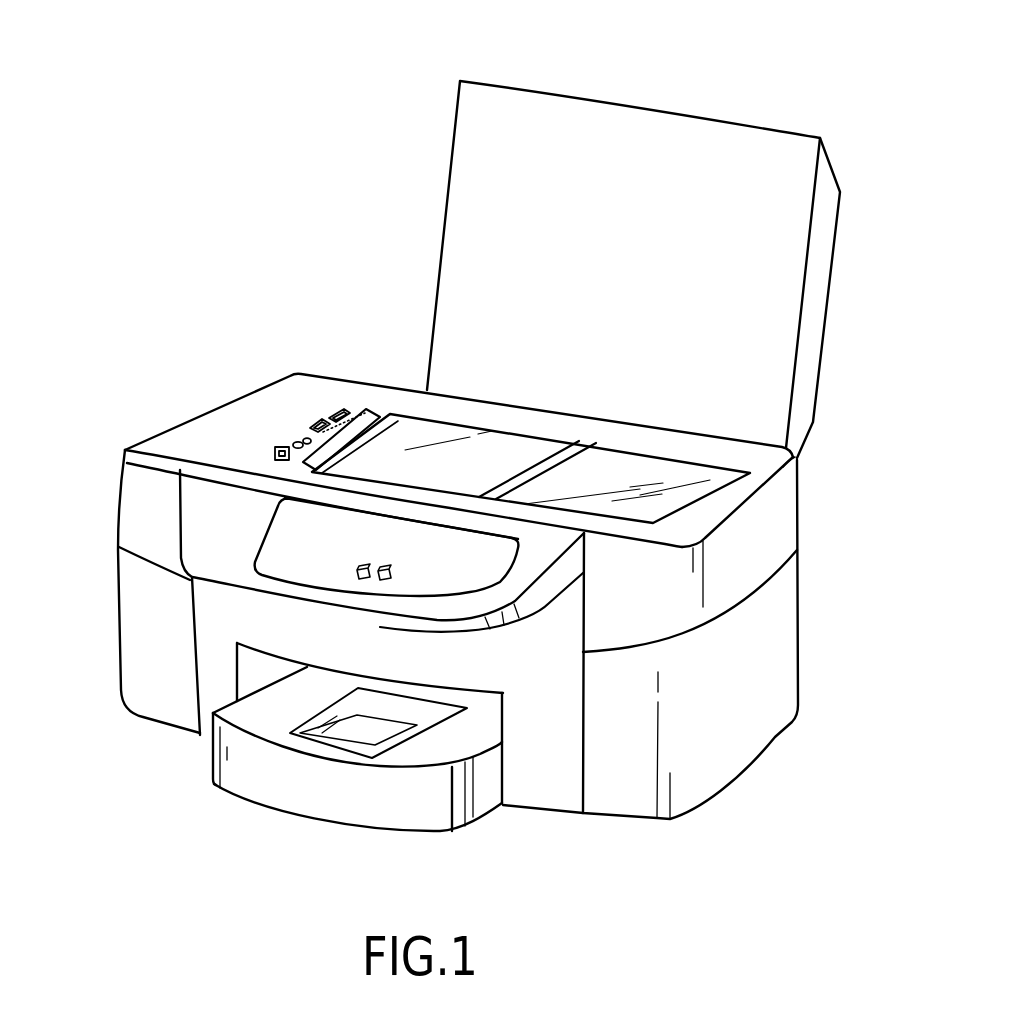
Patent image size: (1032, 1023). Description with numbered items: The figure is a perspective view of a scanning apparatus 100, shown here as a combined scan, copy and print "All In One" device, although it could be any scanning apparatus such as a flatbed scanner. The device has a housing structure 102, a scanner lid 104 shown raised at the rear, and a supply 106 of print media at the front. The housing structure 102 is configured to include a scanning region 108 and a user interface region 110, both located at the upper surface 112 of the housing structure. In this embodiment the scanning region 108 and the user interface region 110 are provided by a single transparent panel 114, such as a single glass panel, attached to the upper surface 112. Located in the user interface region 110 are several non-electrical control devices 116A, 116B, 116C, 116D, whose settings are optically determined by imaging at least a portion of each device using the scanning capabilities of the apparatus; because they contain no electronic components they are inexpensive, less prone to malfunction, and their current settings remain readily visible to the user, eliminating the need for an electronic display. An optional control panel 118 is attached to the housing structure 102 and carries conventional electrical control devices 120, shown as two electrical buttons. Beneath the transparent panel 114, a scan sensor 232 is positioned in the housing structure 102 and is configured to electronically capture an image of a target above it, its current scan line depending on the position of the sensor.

The scanning apparatus 100 is at (773, 52).
The housing structure 102 is at (798, 641).
The scanner lid 104 is at (834, 171).
The supply of print media 106 is at (277, 793).
The scanning region 108 is at (650, 464).
The user interface region 110 is at (357, 366).
The upper surface 112 is at (747, 492).
The transparent panel 114 is at (708, 475).
The non-electrical control device 116A is at (277, 449).
The non-electrical control device 116B is at (268, 460).
The non-electrical control device 116C is at (334, 416).
The non-electrical control device 116D is at (296, 442).
The control panel 118 is at (270, 562).
The electrical control devices 120 is at (387, 566).
The scan sensor 232 is at (560, 443).